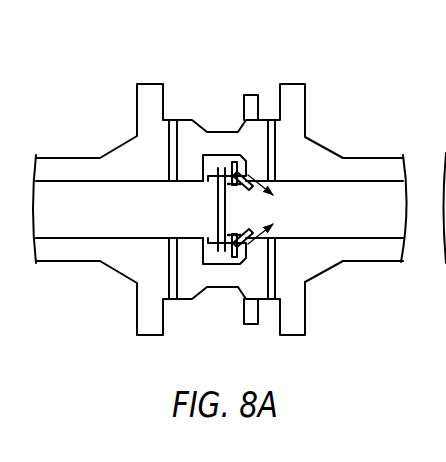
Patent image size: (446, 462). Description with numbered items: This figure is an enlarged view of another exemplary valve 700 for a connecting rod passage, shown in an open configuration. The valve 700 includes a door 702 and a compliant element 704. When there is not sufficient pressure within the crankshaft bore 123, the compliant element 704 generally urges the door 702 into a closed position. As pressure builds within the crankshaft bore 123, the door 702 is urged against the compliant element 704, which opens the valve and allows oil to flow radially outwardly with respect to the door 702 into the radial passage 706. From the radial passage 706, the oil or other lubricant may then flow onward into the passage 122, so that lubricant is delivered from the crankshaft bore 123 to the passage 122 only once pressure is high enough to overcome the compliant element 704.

The valve 700 is at (210, 108).
The door 702 is at (218, 204).
The compliant element 704 is at (240, 241).
The radial passage 706 is at (221, 160).
The passage 122 is at (332, 209).
The crankshaft bore 123 is at (120, 209).